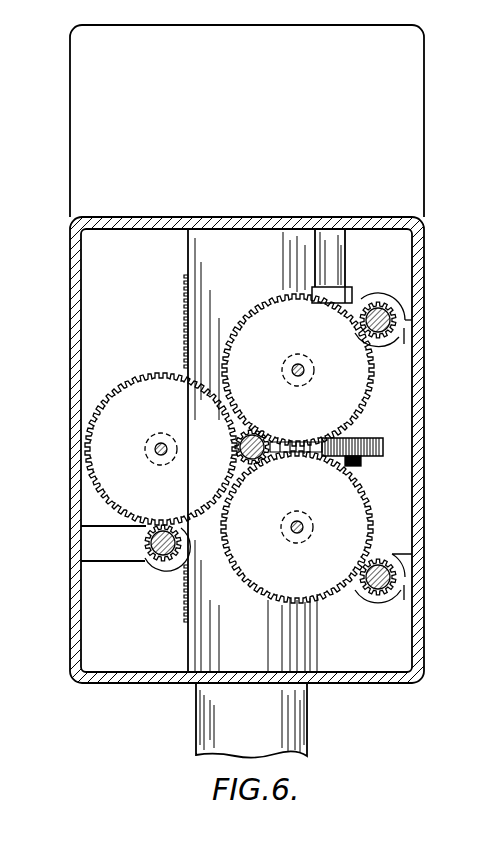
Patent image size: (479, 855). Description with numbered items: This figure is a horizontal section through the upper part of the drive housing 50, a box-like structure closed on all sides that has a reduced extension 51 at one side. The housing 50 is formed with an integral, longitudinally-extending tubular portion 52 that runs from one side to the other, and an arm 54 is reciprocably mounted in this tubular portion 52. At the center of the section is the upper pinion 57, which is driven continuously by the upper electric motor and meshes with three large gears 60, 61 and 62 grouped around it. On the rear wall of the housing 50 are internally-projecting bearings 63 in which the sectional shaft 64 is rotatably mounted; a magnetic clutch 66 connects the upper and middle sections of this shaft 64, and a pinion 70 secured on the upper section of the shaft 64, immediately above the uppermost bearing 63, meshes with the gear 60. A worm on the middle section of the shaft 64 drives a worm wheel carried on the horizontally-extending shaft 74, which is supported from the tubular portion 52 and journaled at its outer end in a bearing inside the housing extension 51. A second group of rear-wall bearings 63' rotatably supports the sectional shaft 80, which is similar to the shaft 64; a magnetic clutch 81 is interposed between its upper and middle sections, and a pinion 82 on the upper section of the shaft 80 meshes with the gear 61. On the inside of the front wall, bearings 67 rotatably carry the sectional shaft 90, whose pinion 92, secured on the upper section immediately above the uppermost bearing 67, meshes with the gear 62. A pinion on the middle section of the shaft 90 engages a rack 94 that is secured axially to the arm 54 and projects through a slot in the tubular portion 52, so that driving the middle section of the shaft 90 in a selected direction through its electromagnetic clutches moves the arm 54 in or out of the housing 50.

The housing 50 is at (76, 380).
The reduced extension 51 is at (85, 169).
The tubular portion 52 is at (200, 250).
The arm 54 is at (215, 710).
The upper pinion 57 is at (259, 436).
The gear 60 is at (368, 392).
The gear 61 is at (362, 518).
The gear 62 is at (148, 388).
The bearing 63 is at (381, 332).
The bearing 63' is at (397, 604).
The sectional shaft 64 is at (375, 310).
The magnetic clutch 66 is at (384, 301).
The bearing 67 is at (108, 548).
The pinion 70 is at (412, 320).
The horizontally-extending shaft 74 is at (340, 262).
The sectional shaft 80 is at (380, 572).
The magnetic clutch 81 is at (370, 605).
The pinion 82 is at (363, 587).
The sectional shaft 90 is at (153, 555).
The pinion 92 is at (170, 568).
The rack 94 is at (182, 297).